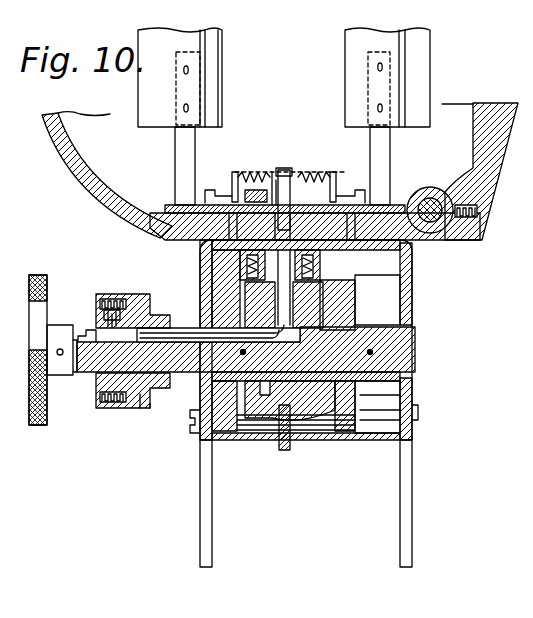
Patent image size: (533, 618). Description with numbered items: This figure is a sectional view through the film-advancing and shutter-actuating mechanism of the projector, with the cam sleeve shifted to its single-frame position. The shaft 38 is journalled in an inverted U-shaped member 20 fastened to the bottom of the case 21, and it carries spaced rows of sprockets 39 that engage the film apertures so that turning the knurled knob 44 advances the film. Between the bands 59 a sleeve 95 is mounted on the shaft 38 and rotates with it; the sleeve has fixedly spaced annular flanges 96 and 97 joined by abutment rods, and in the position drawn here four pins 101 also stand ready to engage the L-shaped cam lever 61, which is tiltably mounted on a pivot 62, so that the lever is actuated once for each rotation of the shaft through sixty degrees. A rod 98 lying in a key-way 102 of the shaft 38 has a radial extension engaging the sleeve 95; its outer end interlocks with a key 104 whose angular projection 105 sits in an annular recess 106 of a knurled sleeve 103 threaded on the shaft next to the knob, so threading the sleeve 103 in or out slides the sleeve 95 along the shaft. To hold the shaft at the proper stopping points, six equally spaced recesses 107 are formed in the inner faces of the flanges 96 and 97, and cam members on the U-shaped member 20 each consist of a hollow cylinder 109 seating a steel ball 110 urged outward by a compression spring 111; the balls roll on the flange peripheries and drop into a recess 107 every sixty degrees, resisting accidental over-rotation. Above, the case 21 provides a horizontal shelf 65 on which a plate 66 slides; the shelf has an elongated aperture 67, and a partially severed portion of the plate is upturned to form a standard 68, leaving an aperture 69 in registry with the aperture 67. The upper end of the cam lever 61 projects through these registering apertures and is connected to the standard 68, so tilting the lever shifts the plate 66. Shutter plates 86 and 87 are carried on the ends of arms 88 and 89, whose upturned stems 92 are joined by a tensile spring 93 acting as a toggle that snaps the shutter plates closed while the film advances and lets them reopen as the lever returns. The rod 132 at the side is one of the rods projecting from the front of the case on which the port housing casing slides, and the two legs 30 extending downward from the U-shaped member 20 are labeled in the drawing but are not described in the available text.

The case 21 is at (68, 178).
The shutter plate 87 is at (222, 58).
The shutter plate 86 is at (347, 46).
The plate 66 is at (170, 205).
The shelf 65 is at (160, 240).
The arm 89 is at (226, 202).
The stem 92 is at (243, 180).
The aperture 69 is at (260, 190).
The tensile spring 93 is at (278, 185).
The cam lever 61 is at (286, 200).
The standard 68 is at (306, 205).
The elongated aperture 67 is at (336, 200).
The arm 88 is at (350, 200).
The rod 132 is at (440, 240).
The U-shaped member 20 is at (413, 285).
The hollow cylinder 109 is at (212, 262).
The compression spring 111 is at (312, 268).
The steel ball 110 is at (338, 265).
The band 59 is at (356, 292).
The shaft 38 is at (416, 346).
The key-way 102 is at (177, 328).
The knurled sleeve 103 is at (132, 294).
The annular recess 106 is at (112, 298).
The angular projection 105 is at (104, 314).
The key 104 is at (84, 332).
The rod 98 is at (188, 376).
The knurled knob 44 is at (42, 425).
The sprocket 39 is at (200, 445).
The annular flange 97 is at (232, 432).
The pin 101 is at (272, 422).
The sleeve 95 is at (292, 435).
The recess 107 is at (258, 432).
The annular flange 96 is at (332, 428).
The pivot 62 is at (384, 434).
The leg 30 is at (200, 502).